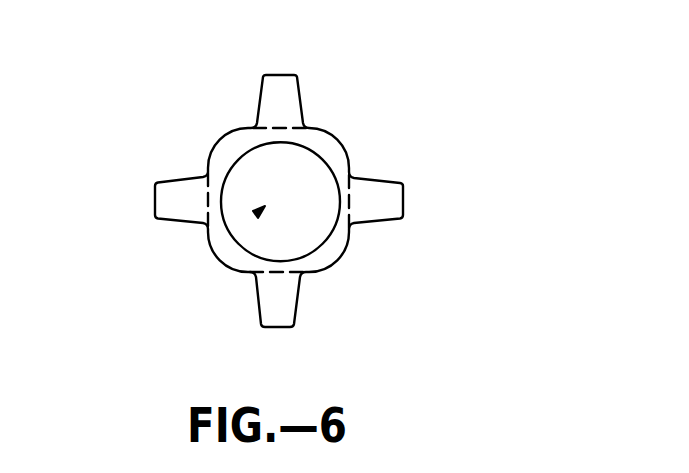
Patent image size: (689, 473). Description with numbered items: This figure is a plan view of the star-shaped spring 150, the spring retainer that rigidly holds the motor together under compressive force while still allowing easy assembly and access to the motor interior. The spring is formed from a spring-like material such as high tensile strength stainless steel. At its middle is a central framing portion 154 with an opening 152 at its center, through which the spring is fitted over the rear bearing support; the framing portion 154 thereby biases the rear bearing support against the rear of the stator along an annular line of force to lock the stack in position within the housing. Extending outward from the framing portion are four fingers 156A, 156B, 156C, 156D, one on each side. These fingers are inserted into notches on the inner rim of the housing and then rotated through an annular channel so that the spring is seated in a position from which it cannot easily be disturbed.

The star-shaped spring 150 is at (327, 250).
The opening 152 is at (262, 210).
The central framing portion 154 is at (230, 152).
The finger 156A is at (383, 202).
The finger 156B is at (280, 92).
The finger 156C is at (178, 197).
The finger 156D is at (282, 307).